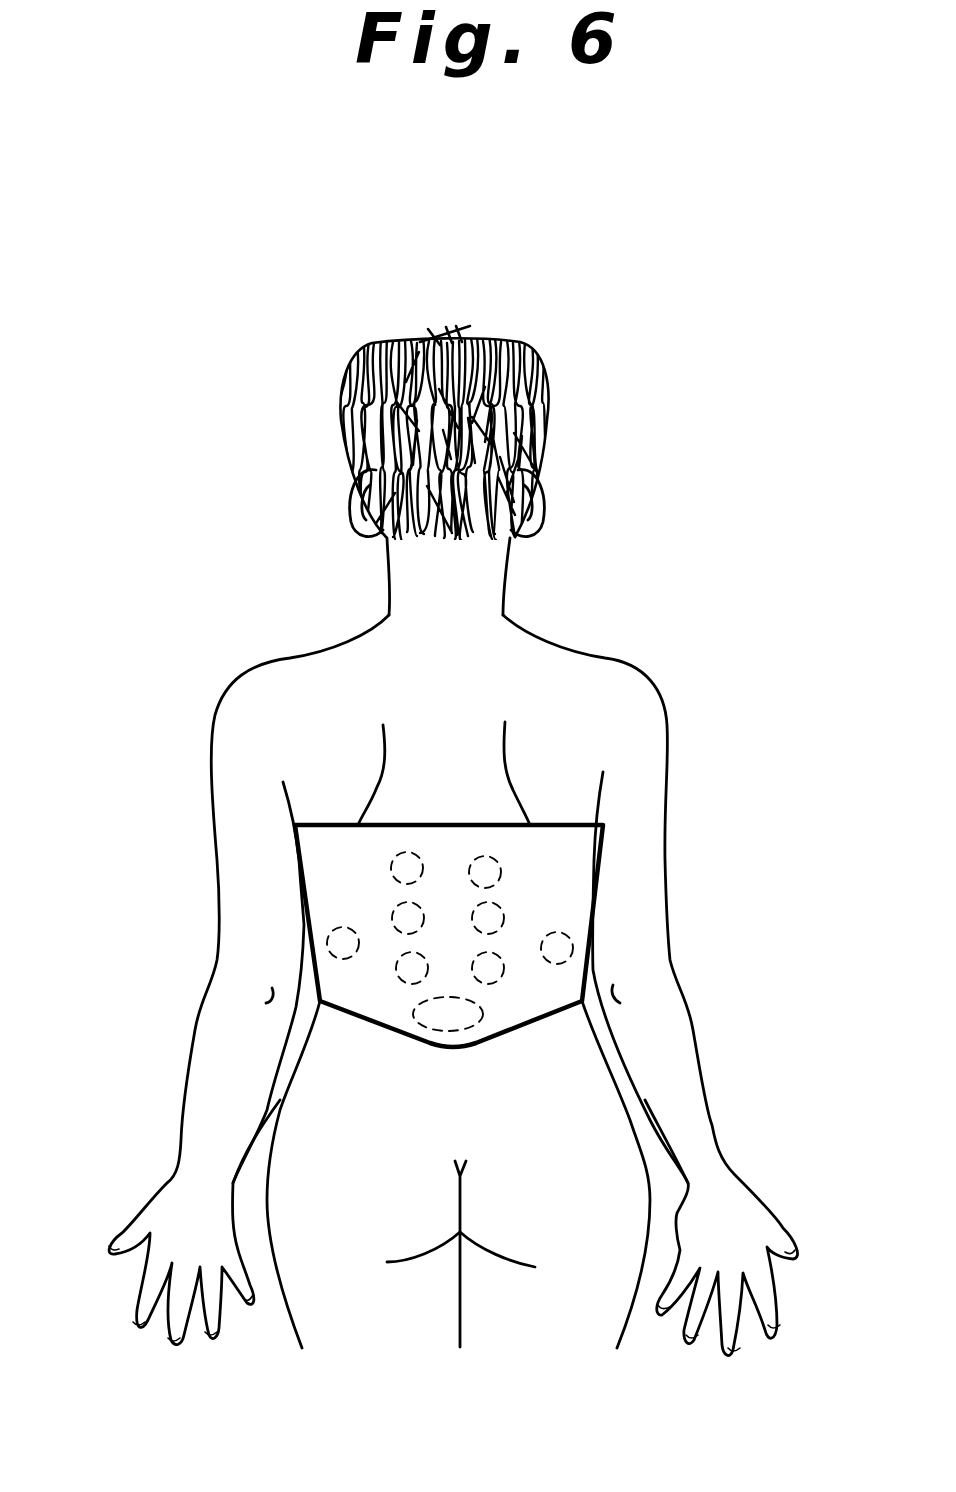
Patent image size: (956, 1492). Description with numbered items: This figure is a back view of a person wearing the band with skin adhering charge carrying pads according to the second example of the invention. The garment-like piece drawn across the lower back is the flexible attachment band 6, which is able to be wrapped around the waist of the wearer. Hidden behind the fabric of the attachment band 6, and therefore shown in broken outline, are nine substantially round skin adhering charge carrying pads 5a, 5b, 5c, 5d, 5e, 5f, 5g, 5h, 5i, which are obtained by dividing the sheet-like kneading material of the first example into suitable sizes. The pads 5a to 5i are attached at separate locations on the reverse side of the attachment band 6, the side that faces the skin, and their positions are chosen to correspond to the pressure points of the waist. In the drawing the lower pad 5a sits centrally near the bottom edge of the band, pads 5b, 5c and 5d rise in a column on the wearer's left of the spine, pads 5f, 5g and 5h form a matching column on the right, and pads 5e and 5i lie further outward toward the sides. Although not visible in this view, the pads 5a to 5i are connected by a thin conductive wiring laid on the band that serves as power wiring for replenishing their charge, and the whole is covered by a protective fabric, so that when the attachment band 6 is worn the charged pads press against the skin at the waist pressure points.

The skin adhering charge carrying pad 5a is at (430, 1022).
The skin adhering charge carrying pad 5b is at (400, 982).
The skin adhering charge carrying pad 5c is at (392, 915).
The skin adhering charge carrying pad 5d is at (393, 866).
The skin adhering charge carrying pad 5e is at (330, 956).
The skin adhering charge carrying pad 5f is at (513, 982).
The skin adhering charge carrying pad 5g is at (502, 910).
The skin adhering charge carrying pad 5h is at (502, 866).
The skin adhering charge carrying pad 5i is at (574, 947).
The attachment band 6 is at (517, 1013).